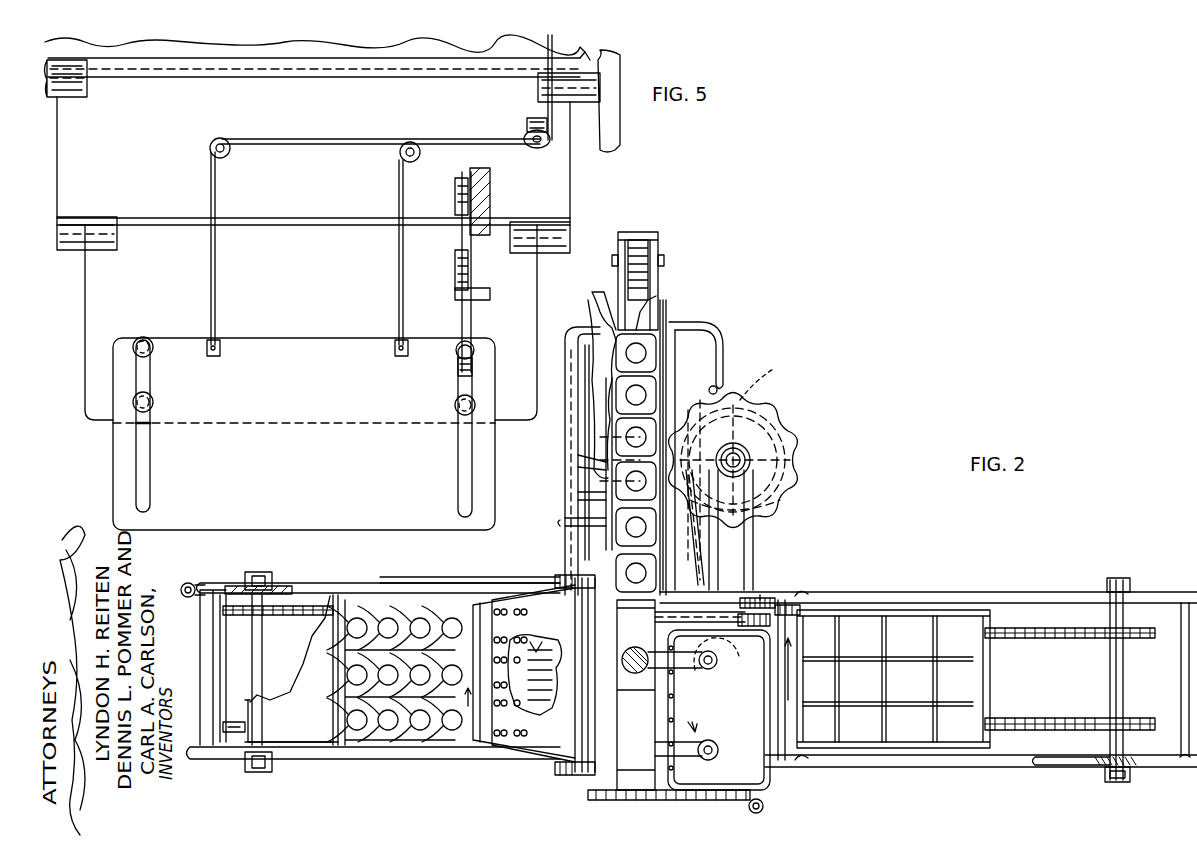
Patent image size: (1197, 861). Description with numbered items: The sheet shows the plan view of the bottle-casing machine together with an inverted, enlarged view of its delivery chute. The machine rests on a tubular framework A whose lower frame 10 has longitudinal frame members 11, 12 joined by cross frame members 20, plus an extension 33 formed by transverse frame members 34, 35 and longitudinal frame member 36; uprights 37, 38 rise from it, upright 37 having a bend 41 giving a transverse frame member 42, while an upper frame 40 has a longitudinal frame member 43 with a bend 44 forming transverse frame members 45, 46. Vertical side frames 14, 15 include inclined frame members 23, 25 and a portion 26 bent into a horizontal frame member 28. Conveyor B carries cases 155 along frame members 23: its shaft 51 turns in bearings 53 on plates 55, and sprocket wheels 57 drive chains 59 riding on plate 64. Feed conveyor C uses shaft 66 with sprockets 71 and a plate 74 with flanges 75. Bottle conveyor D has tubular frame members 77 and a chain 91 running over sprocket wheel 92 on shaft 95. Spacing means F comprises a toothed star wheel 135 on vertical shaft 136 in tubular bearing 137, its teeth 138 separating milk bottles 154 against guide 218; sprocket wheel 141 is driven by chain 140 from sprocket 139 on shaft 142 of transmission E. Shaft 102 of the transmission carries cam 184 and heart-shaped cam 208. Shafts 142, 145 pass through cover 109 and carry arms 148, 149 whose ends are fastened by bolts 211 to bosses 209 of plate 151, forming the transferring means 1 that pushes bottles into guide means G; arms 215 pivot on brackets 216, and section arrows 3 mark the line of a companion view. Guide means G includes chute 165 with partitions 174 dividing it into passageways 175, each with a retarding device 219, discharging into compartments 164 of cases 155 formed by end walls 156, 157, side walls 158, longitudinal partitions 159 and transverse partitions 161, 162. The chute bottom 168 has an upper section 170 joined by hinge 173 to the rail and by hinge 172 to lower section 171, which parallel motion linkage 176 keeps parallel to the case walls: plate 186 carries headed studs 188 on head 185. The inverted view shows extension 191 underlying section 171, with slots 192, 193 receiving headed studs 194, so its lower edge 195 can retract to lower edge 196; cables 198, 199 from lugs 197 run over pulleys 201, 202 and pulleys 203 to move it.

In FIG. 5, the upper section 170 is at (208, 50).
In FIG. 5, the hinge 173 is at (75, 88).
In FIG. 5, the hinge 172 is at (75, 225).
In FIG. 5, the lower section 171 is at (330, 285).
In FIG. 5, the bottom 168 is at (337, 176).
In FIG. 5, the pulley 201 is at (219, 141).
In FIG. 5, the pulley 202 is at (413, 161).
In FIG. 5, the pulleys 203 is at (542, 148).
In FIG. 5, the cable 198 is at (216, 280).
In FIG. 5, the cable 199 is at (399, 255).
In FIG. 5, the lugs 197 is at (222, 349).
In FIG. 5, the head 185 is at (483, 200).
In FIG. 5, the plate 186 is at (472, 309).
In FIG. 5, the headed studs 188 is at (455, 206).
In FIG. 5, the parallel motion linkage 176 is at (455, 293).
In FIG. 5, the extension 191 is at (320, 473).
In FIG. 5, the lower edge 195 is at (342, 527).
In FIG. 5, the lower edge 196 is at (252, 423).
In FIG. 5, the slot 192 is at (152, 384).
In FIG. 5, the slot 193 is at (455, 386).
In FIG. 5, the headed studs 194 is at (145, 337).
In FIG. 2, the bottle conveyor D is at (653, 235).
In FIG. 2, the horizontal tubular frame members 77 is at (651, 253).
In FIG. 2, the sprocket wheel 92 is at (625, 247).
In FIG. 2, the chain 91 is at (650, 291).
In FIG. 2, the shaft 95 is at (613, 258).
In FIG. 2, the chain 140 is at (693, 548).
In FIG. 2, the guide 218 is at (594, 350).
In FIG. 2, the transversely extending frame member 34 is at (571, 452).
In FIG. 2, the upper horizontal frame 40 is at (596, 455).
In FIG. 2, the bend 44 is at (598, 466).
In FIG. 2, the transverse frame member 46 is at (598, 488).
In FIG. 2, the upright 38 is at (566, 517).
In FIG. 2, the longitudinal frame member 36 is at (688, 330).
In FIG. 2, the extension 33 is at (719, 330).
In FIG. 2, the transversely extending frame member 35 is at (719, 372).
In FIG. 2, the transverse frame member 45 is at (752, 545).
In FIG. 2, the bend 41 is at (742, 368).
In FIG. 2, the upright 37 is at (762, 356).
In FIG. 2, the longitudinal frame member 43 is at (684, 440).
In FIG. 2, the transverse frame member 42 is at (736, 392).
In FIG. 2, the spacing means F is at (786, 373).
In FIG. 2, the toothed star wheel 135 is at (762, 414).
In FIG. 2, the vertical shaft 136 is at (742, 458).
In FIG. 2, the tubular bearing 137 is at (790, 450).
In FIG. 2, the teeth 138 is at (795, 502).
In FIG. 2, the sprocket wheel 141 is at (800, 500).
In FIG. 2, the frame member 23 is at (350, 583).
In FIG. 2, the longitudinal frame member 12 is at (410, 588).
In FIG. 2, the framework A is at (187, 582).
In FIG. 2, the upwardly inclined frame member 25 is at (197, 586).
In FIG. 2, the vertical side frame 15 is at (1000, 592).
In FIG. 2, the vertical side frame 14 is at (968, 767).
In FIG. 2, the bearings 53 is at (251, 574).
In FIG. 2, the plates 55 is at (284, 586).
In FIG. 2, the shaft 51 is at (253, 657).
In FIG. 2, the chains 59 is at (305, 616).
In FIG. 2, the sprocket wheels 57 is at (248, 615).
In FIG. 2, the conveyor B is at (308, 606).
In FIG. 2, the milk bottles 154 is at (317, 670).
In FIG. 2, the plate 64 is at (303, 661).
In FIG. 2, the cases 155 is at (930, 580).
In FIG. 2, the end wall 156 is at (321, 745).
In FIG. 2, the side walls 158 is at (433, 600).
In FIG. 2, the end wall 157 is at (445, 735).
In FIG. 2, the longitudinal partitions 159 is at (430, 658).
In FIG. 2, the direction arrow 3 is at (627, 681).
In FIG. 2, the guide means G is at (522, 748).
In FIG. 2, the retarding device 219 is at (528, 672).
In FIG. 2, the partitions 174 is at (540, 650).
In FIG. 2, the passageways 175 is at (524, 671).
In FIG. 2, the arms 215 is at (583, 775).
In FIG. 2, the brackets 216 is at (555, 582).
In FIG. 2, the plate 151 is at (670, 664).
In FIG. 2, the bolts 211 is at (637, 648).
In FIG. 2, the bosses 209 is at (648, 672).
In FIG. 2, the arm 148 is at (690, 672).
In FIG. 2, the shaft 142 is at (717, 664).
In FIG. 2, the sprocket 139 is at (726, 654).
In FIG. 2, the transferring means 1 is at (660, 746).
In FIG. 2, the arm 149 is at (695, 746).
In FIG. 2, the shaft 145 is at (720, 750).
In FIG. 2, the transmission E is at (762, 738).
In FIG. 2, the cover 109 is at (765, 797).
In FIG. 2, the heart-shaped cam 208 is at (766, 598).
In FIG. 2, the horizontal frame member 28 is at (800, 592).
In FIG. 2, the portion 26 is at (822, 592).
In FIG. 2, the transverse partition 161 is at (884, 680).
In FIG. 2, the transverse partition 162 is at (888, 620).
In FIG. 2, the chute 165 is at (936, 710).
In FIG. 2, the compartments 164 is at (850, 748).
In FIG. 2, the cam 184 is at (782, 624).
In FIG. 2, the shaft 102 is at (790, 691).
In FIG. 2, the feed conveyor C is at (1046, 628).
In FIG. 2, the sprockets 71 is at (1100, 632).
In FIG. 2, the plate 74 is at (1092, 676).
In FIG. 2, the shaft 66 is at (1116, 698).
In FIG. 2, the cross frame members 20 is at (1195, 698).
In FIG. 2, the flanges 75 is at (1062, 755).
In FIG. 2, the longitudinal frame member 11 is at (1066, 767).
In FIG. 2, the lower frame 10 is at (1158, 767).